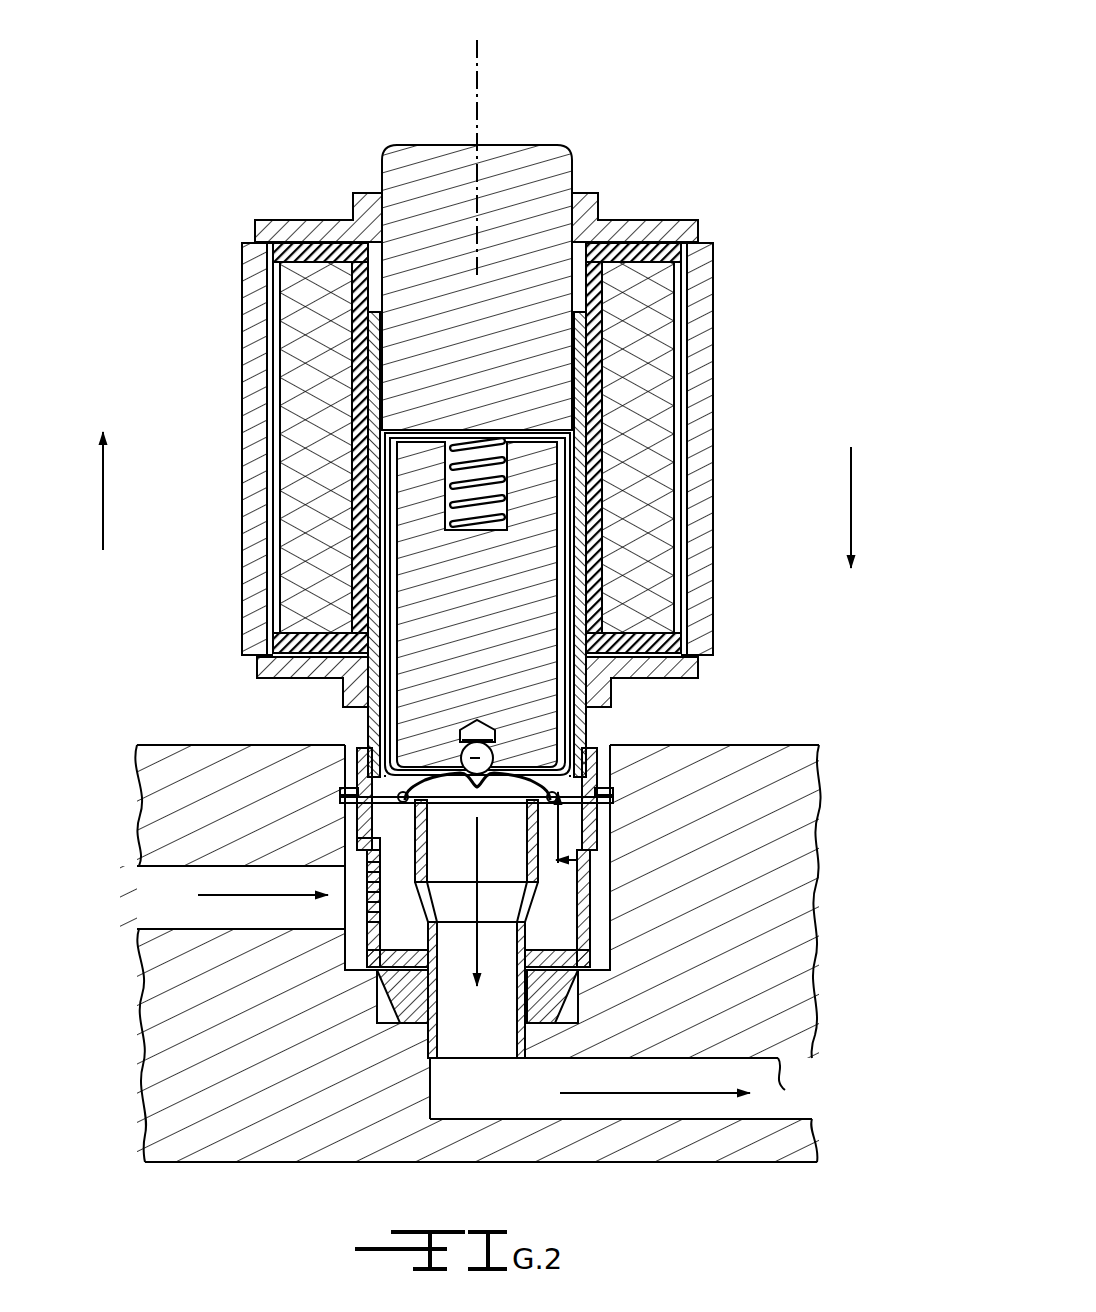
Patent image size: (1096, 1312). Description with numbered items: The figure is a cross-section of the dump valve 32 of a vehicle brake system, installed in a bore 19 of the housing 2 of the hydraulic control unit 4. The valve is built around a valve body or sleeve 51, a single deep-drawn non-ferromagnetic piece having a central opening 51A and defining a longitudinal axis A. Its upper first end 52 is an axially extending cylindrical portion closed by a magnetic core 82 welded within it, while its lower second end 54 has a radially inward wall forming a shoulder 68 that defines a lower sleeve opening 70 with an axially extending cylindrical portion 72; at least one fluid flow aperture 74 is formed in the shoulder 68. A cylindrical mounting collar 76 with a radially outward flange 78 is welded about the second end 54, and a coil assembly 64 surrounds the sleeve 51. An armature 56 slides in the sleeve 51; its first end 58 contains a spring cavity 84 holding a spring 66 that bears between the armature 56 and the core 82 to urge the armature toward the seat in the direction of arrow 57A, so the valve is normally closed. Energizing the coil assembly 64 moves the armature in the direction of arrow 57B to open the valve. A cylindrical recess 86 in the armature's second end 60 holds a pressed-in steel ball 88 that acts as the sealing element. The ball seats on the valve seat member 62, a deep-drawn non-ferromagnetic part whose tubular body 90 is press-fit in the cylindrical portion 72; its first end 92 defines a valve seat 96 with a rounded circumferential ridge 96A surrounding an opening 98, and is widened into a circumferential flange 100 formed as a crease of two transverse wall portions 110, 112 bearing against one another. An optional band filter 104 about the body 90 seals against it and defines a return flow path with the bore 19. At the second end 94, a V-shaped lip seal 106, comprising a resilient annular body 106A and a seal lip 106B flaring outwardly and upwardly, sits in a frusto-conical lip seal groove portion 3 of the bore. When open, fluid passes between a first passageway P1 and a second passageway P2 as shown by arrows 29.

The dump valve 32 is at (488, 393).
The longitudinal axis A is at (483, 46).
The sleeve 51 is at (477, 255).
The central opening 51A is at (398, 376).
The magnetic core 82 is at (586, 154).
The coil assembly 64 is at (724, 256).
The first end of sleeve 52 is at (368, 312).
The first end of armature 58 is at (537, 448).
The armature 56 is at (584, 457).
The closing direction arrow 57A is at (851, 512).
The opening direction arrow 57B is at (103, 497).
The spring cavity 84 is at (448, 455).
The spring 66 is at (509, 508).
The second end of armature 60 is at (355, 707).
The mounting collar 76 is at (372, 740).
The recess 86 is at (566, 714).
The valve seat 96 is at (462, 692).
The circumferential ridge 96A is at (421, 778).
The ball 88 is at (500, 745).
The opening 98 is at (477, 801).
The circumferential flange of collar 78 is at (615, 798).
The circumferential flange 100 is at (350, 748).
The first end of valve seat member 92 is at (600, 750).
The shoulder 68 is at (342, 790).
The wall portion 110 is at (624, 752).
The band filter 104 is at (477, 858).
The bore 19 is at (582, 945).
The second end of sleeve 54 is at (650, 861).
The cylindrical portion 72 is at (446, 861).
The sleeve opening 70 is at (511, 861).
The wall portion 112 is at (368, 865).
The fluid flow aperture 74 is at (380, 848).
The flow arrows 29 is at (298, 898).
The first passageway P1 is at (196, 897).
The second passageway P2 is at (818, 1087).
The hydraulic control unit 4 is at (464, 940).
The lip seal groove portion 3 is at (366, 975).
The housing 2 is at (160, 1143).
The lip seal 106 is at (513, 1006).
The annular body 106A is at (560, 1000).
The seal lip 106B is at (565, 1040).
The second end of valve seat member 94 is at (562, 1055).
The valve seat member 62 is at (382, 1068).
The body 90 is at (510, 1040).